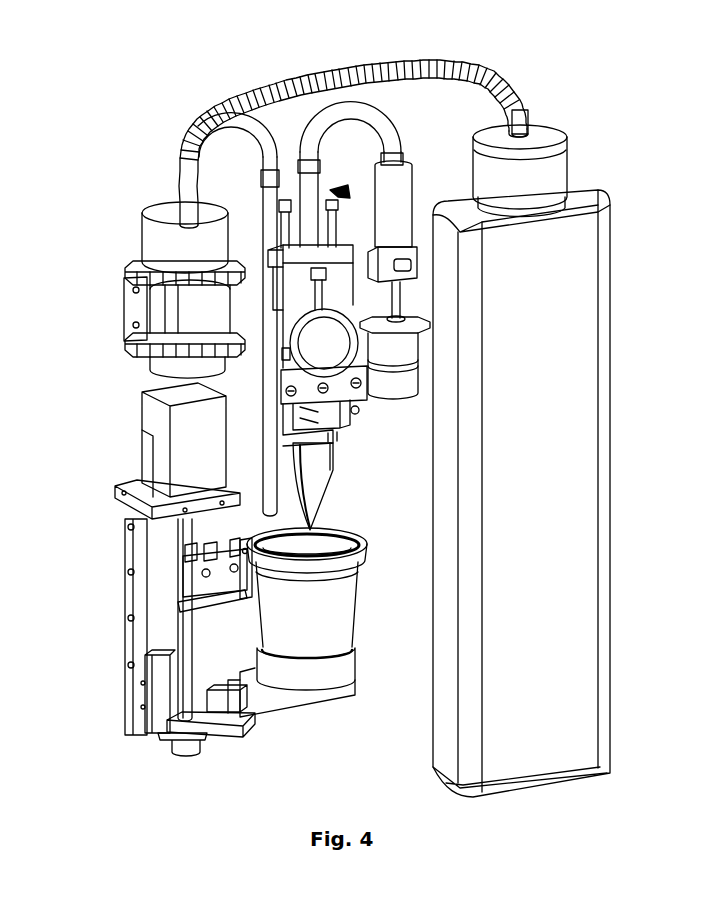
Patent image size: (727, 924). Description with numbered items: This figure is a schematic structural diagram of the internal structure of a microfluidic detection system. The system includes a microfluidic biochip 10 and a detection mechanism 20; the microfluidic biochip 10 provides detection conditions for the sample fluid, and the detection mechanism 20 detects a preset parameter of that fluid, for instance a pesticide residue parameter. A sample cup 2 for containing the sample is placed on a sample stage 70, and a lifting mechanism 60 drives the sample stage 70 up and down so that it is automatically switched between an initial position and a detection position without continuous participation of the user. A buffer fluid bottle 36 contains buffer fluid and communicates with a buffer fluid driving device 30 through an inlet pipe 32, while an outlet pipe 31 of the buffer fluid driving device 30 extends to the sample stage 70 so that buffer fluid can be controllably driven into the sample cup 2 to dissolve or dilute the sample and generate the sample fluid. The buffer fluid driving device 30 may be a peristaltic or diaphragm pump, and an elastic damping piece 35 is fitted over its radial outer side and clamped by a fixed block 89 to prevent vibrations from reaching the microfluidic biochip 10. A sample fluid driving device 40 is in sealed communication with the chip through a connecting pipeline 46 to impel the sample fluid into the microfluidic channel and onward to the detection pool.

The sample cup 2 is at (332, 626).
The microfluidic biochip 10 is at (312, 490).
The detection mechanism 20 is at (356, 410).
The buffer fluid driving device 30 is at (132, 230).
The outlet pipe 31 is at (267, 222).
The inlet pipe 32 is at (362, 66).
The elastic damping piece 35 is at (180, 321).
The buffer fluid bottle 36 is at (440, 749).
The sample fluid driving device 40 is at (418, 185).
The connecting pipeline 46 is at (392, 134).
The lifting mechanism 60 is at (113, 519).
The sample stage 70 is at (257, 737).
The fixed block 89 is at (133, 312).